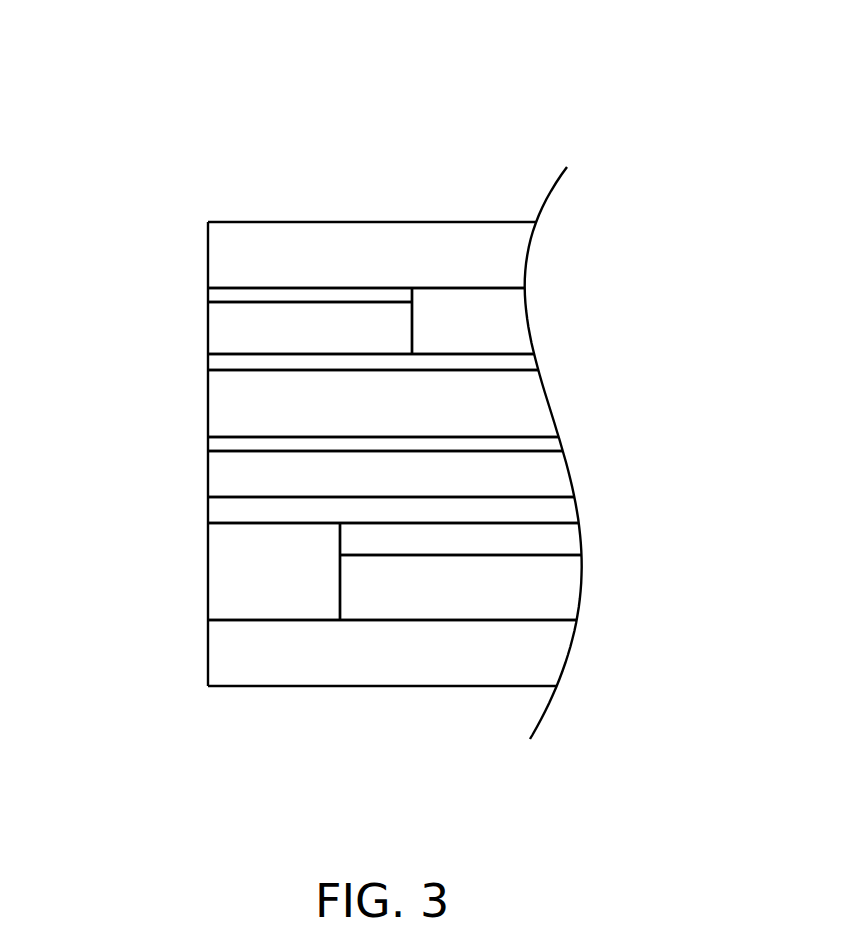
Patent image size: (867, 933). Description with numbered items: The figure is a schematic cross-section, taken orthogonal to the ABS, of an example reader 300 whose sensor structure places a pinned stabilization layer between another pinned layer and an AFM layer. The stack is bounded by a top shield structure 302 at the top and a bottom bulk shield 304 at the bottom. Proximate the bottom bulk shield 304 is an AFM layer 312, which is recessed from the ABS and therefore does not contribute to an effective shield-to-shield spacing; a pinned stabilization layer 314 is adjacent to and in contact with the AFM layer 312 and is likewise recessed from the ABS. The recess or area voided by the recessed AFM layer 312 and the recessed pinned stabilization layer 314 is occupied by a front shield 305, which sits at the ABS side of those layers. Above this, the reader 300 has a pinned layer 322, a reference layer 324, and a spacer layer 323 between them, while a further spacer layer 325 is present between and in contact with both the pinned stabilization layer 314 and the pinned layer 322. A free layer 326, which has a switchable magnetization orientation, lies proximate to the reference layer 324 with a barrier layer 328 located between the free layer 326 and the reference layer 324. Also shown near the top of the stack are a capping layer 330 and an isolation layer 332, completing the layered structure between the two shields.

The reader 300 is at (222, 88).
The top shield structure 302 is at (207, 235).
The capping layer 330 is at (207, 296).
The free layer 326 is at (207, 342).
The isolation layer 332 is at (528, 322).
The barrier layer 328 is at (207, 362).
The reference layer 324 is at (207, 395).
The spacer layer 323 is at (207, 445).
The pinned layer 322 is at (207, 478).
The spacer layer 325 is at (578, 512).
The front shield 305 is at (207, 577).
The pinned stabilization layer 314 is at (581, 540).
The AFM layer 312 is at (582, 588).
The bottom bulk shield 304 is at (207, 655).
The air bearing surface ABS is at (192, 682).